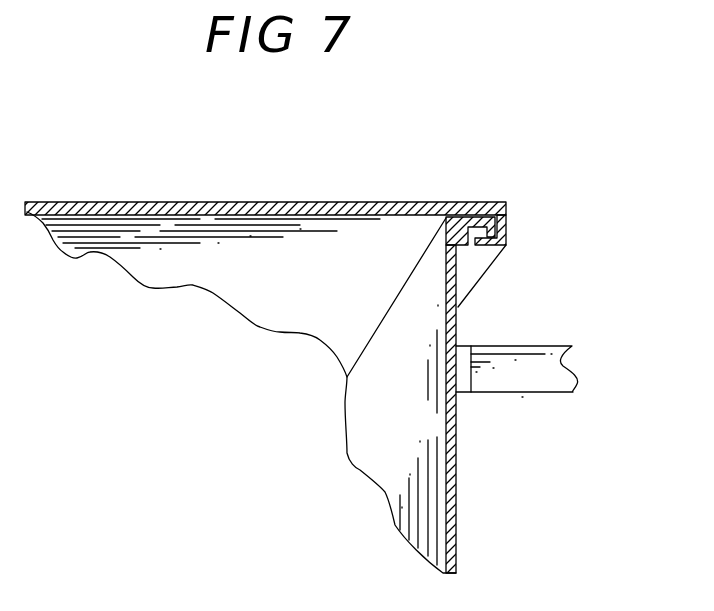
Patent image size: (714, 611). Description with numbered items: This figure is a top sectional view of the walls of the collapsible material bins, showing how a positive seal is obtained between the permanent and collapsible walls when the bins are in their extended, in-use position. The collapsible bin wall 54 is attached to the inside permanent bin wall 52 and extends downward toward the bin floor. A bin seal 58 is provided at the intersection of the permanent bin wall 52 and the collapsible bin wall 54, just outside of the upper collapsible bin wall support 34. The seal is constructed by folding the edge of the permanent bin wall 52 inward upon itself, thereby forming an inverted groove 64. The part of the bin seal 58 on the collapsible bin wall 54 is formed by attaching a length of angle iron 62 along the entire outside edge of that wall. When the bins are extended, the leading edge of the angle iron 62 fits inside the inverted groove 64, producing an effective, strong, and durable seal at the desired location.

The upper collapsible bin wall support 34 is at (522, 400).
The permanent bin wall 52 is at (262, 220).
The collapsible bin wall 54 is at (441, 423).
The bin seal 58 is at (480, 191).
The angle iron 62 is at (471, 264).
The inverted groove 64 is at (514, 218).